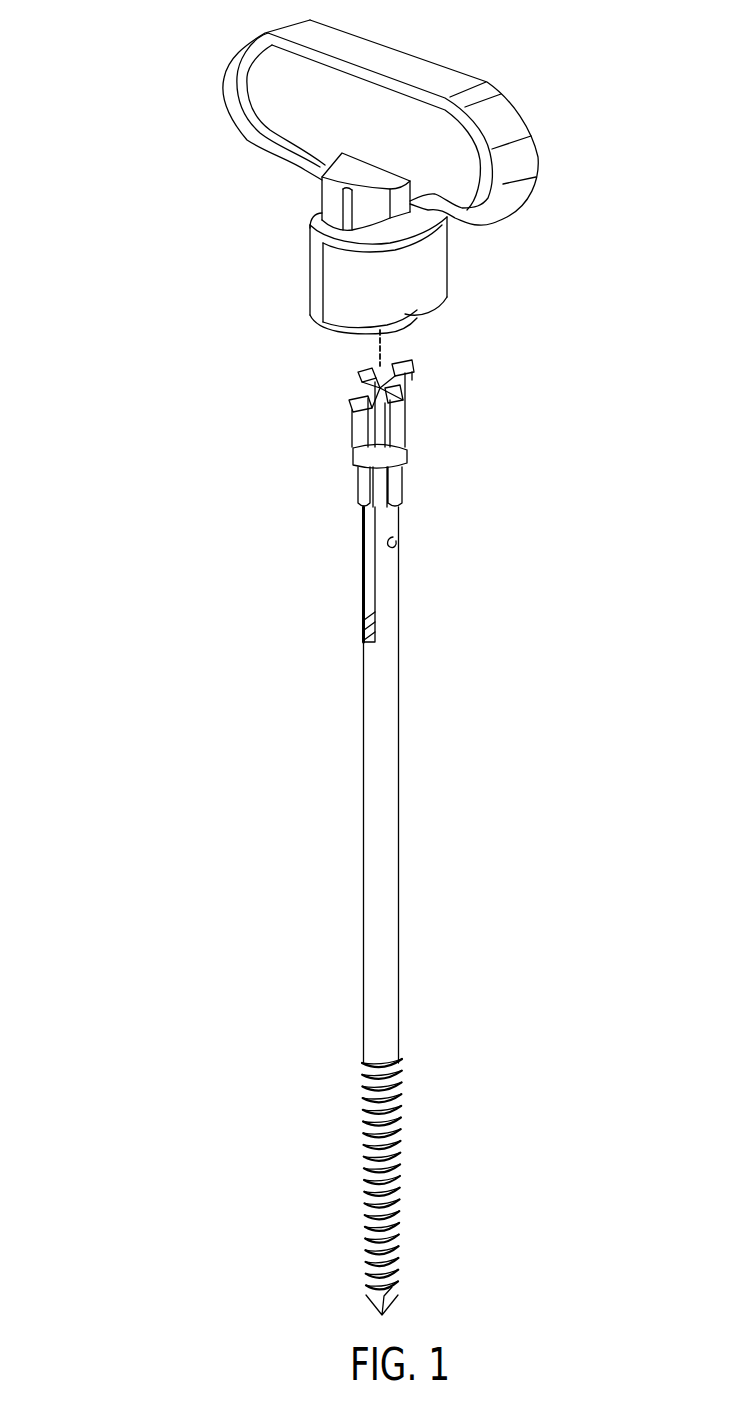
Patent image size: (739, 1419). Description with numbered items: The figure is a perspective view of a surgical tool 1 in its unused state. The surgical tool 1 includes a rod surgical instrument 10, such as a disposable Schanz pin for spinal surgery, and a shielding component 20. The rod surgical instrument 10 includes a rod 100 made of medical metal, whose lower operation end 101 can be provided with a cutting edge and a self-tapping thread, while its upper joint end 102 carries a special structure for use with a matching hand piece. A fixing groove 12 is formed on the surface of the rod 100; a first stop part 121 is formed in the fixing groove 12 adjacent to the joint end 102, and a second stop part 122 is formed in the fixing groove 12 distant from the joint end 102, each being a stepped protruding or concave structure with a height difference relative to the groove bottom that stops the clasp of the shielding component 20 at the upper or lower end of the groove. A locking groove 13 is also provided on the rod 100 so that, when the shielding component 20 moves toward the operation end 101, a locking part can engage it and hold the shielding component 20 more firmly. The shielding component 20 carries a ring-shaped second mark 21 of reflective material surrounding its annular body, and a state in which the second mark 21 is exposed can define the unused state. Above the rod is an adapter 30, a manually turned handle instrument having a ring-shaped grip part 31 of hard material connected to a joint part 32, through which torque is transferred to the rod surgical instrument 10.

The surgical tool 1 is at (90, 76).
The rod surgical instrument 10 is at (415, 818).
The rod 100 is at (383, 925).
The operation end 101 is at (388, 1208).
The joint end 102 is at (394, 366).
The fixing groove 12 is at (368, 573).
The first stop part 121 is at (367, 522).
The second stop part 122 is at (372, 633).
The locking groove 13 is at (399, 543).
The shielding component 20 is at (412, 387).
The second mark 21 is at (362, 457).
The adapter 30 is at (529, 160).
The grip part 31 is at (382, 57).
The joint part 32 is at (430, 262).